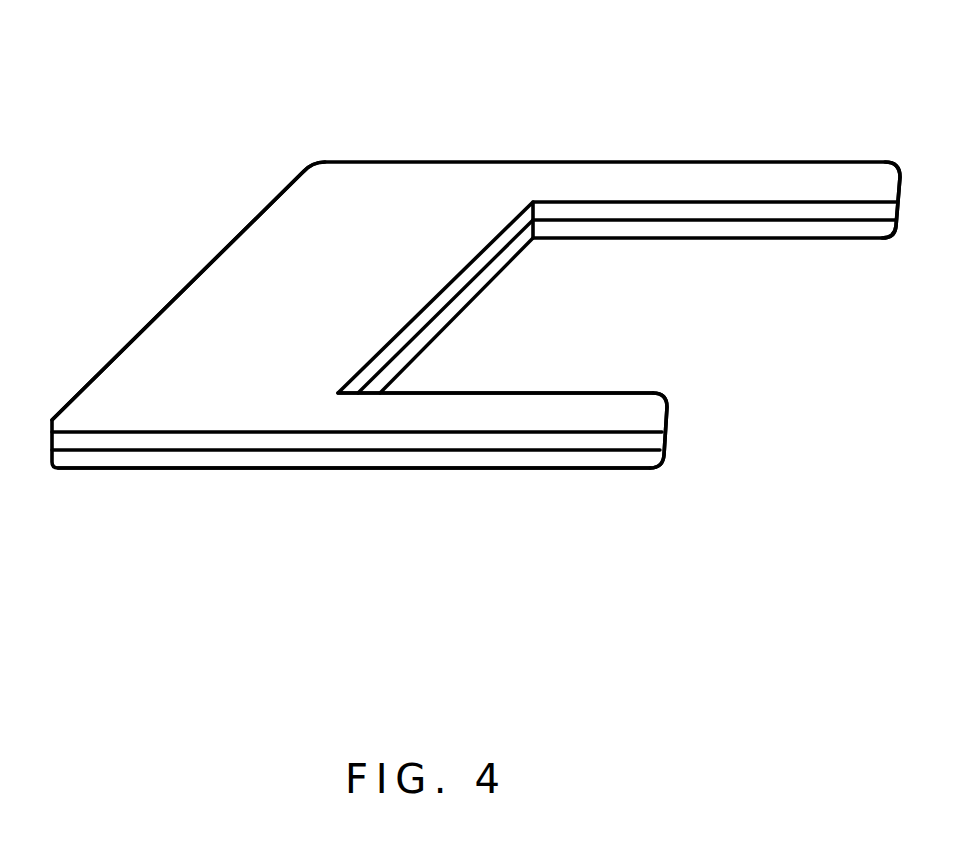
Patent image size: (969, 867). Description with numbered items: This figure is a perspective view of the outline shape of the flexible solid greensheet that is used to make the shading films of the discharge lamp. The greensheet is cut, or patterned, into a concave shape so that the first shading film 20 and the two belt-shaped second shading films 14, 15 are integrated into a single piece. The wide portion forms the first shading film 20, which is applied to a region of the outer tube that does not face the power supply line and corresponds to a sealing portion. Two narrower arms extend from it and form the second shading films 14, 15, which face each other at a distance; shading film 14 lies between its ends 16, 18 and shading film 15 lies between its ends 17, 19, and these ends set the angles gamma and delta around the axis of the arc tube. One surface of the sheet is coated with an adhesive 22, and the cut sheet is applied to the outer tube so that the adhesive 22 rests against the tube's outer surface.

The second shading film 14 is at (558, 412).
The second shading film 15 is at (807, 183).
The end of shading film 16 is at (603, 432).
The end of shading film 17 is at (833, 162).
The end of shading film 18 is at (597, 393).
The end of shading film 19 is at (845, 202).
The first shading film 20 is at (250, 277).
The adhesive 22 is at (247, 462).